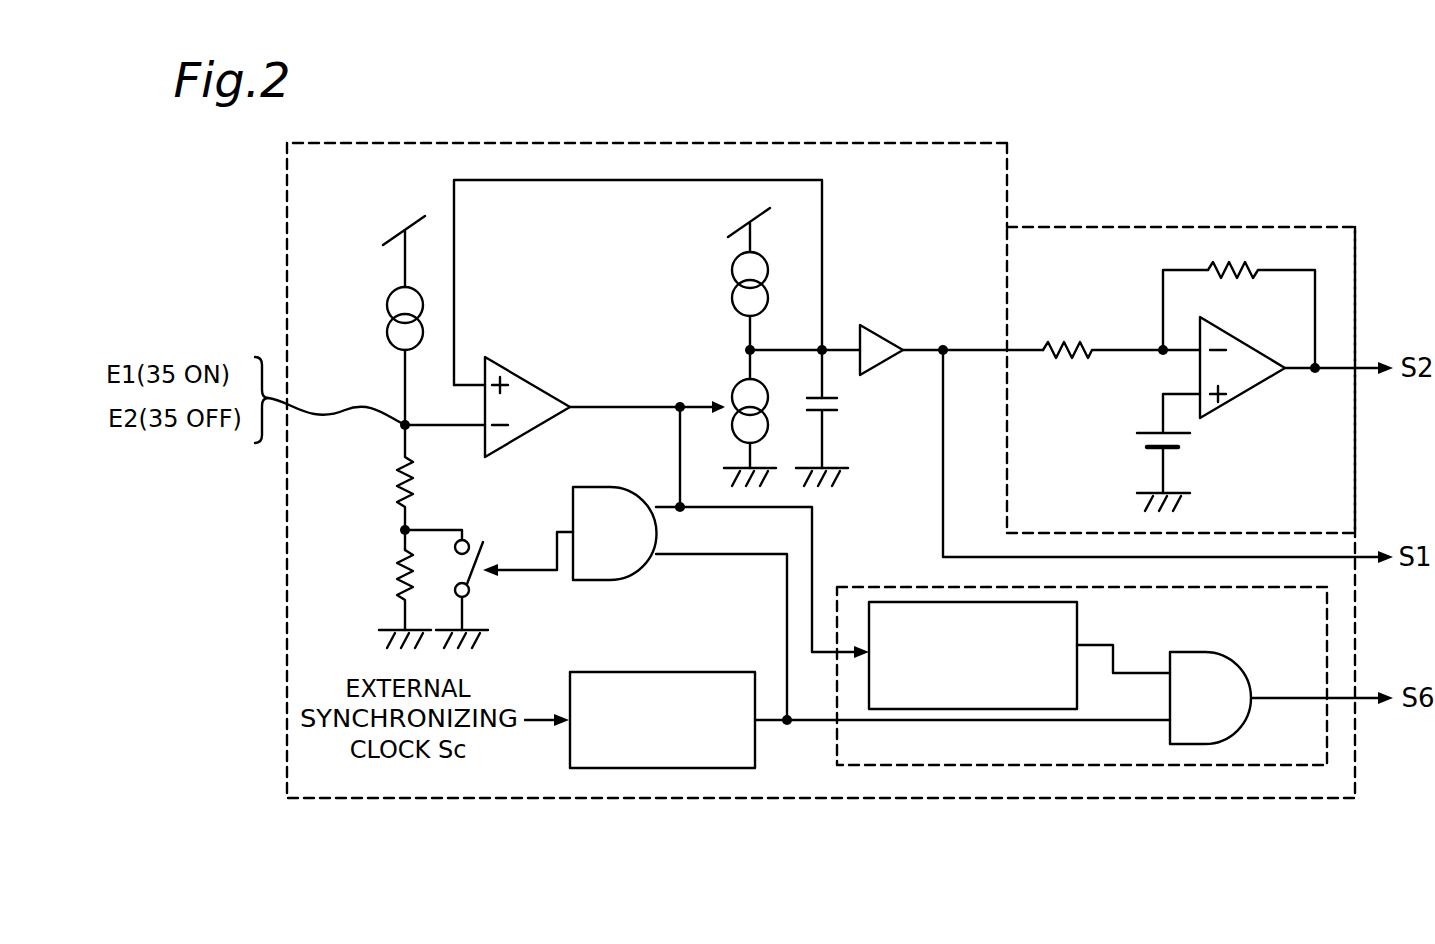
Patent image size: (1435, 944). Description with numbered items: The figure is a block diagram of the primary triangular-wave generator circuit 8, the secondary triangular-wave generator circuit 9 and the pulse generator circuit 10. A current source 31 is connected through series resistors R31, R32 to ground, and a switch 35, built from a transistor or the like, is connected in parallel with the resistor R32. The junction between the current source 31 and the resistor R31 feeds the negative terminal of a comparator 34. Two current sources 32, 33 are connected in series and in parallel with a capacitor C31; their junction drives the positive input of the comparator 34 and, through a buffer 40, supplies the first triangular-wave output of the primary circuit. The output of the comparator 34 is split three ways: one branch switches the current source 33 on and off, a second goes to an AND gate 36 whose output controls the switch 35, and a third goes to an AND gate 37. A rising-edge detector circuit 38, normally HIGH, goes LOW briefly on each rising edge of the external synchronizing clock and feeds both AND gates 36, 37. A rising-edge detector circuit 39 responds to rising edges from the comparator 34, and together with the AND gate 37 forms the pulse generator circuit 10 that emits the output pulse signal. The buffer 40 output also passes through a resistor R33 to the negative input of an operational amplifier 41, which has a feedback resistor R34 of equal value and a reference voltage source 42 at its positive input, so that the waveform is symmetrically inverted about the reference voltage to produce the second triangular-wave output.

The primary triangular-wave generator circuit 8 is at (1043, 798).
The secondary triangular-wave generator circuit 9 is at (1075, 227).
The pulse generator circuit 10 is at (913, 765).
The current source 31 is at (386, 298).
The current source 32 is at (731, 269).
The current source 33 is at (733, 388).
The comparator 34 is at (530, 433).
The switch 35 is at (478, 578).
The AND gate 36 is at (655, 570).
The AND gate 37 is at (1213, 652).
The rising-edge detector circuit 38 is at (715, 768).
The rising-edge detector circuit 39 is at (1078, 617).
The buffer 40 is at (890, 323).
The operational amplifier 41 is at (1245, 393).
The reference voltage source 42 is at (1137, 440).
The resistor R31 is at (394, 482).
The resistor R32 is at (393, 573).
The resistor R33 is at (1070, 333).
The resistor R34 is at (1236, 258).
The capacitor C31 is at (840, 404).